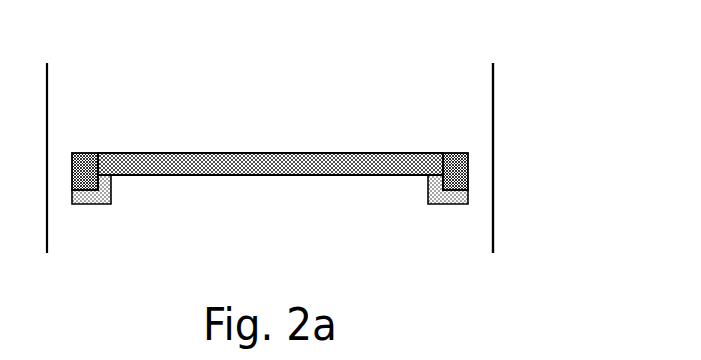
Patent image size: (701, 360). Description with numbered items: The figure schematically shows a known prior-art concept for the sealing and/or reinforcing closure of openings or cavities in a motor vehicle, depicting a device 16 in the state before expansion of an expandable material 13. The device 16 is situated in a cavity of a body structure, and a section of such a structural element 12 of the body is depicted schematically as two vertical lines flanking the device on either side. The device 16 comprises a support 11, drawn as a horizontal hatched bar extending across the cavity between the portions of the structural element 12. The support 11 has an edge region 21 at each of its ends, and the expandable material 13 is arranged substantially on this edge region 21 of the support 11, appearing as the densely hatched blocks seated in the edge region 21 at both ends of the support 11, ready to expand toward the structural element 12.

The support 11 is at (265, 168).
The structural element 12 is at (495, 222).
The expandable material 13 is at (86, 152).
The device 16 is at (265, 127).
The edge region 21 is at (87, 204).